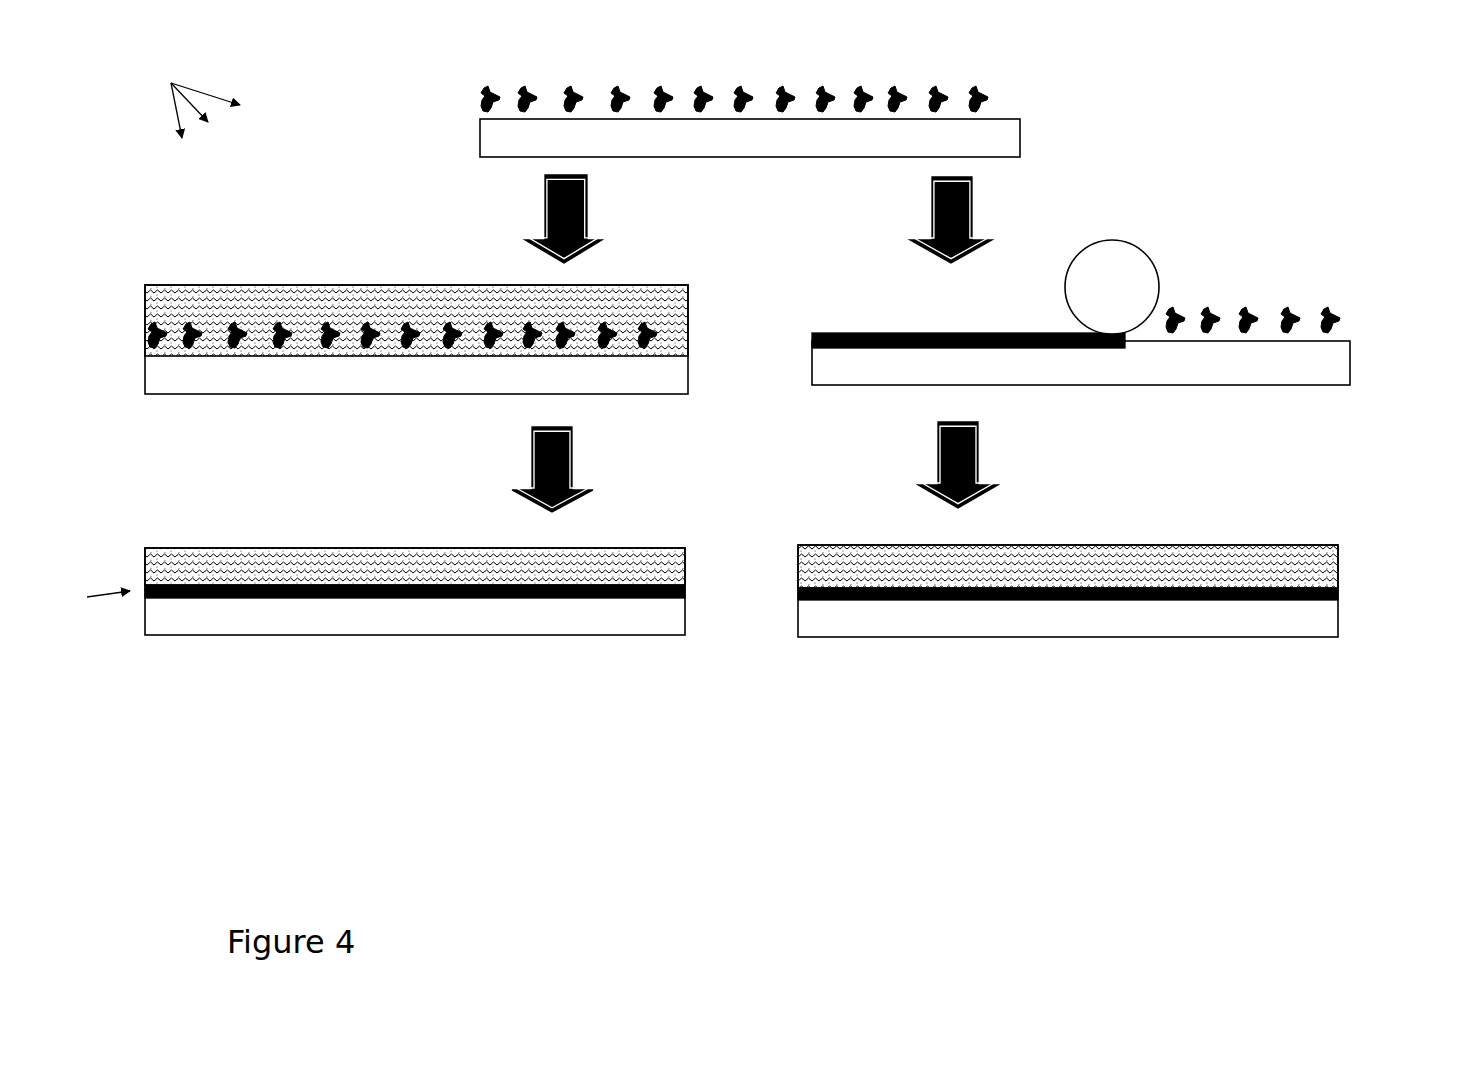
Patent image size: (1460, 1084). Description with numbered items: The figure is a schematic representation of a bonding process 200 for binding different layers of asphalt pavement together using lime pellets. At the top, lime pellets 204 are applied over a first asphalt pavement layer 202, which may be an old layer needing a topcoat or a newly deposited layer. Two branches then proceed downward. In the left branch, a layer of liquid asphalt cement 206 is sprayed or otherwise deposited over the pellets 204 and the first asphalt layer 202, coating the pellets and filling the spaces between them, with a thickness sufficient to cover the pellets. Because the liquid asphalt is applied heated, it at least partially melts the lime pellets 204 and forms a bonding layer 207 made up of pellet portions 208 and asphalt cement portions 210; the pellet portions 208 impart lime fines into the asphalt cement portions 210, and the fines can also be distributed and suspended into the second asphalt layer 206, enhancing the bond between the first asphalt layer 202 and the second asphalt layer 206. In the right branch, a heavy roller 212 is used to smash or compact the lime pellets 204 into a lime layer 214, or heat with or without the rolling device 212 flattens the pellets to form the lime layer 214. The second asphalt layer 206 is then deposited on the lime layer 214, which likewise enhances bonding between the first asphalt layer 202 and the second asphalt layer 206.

The bonding process 200 is at (186, 104).
The asphalt pavement layer 202 is at (500, 138).
The lime pellets 204 is at (480, 92).
The liquid asphalt cement layer 206 is at (332, 295).
The bonding layer 207 is at (107, 584).
The pellet portions 208 is at (253, 597).
The asphalt cement portions 210 is at (296, 598).
The heavy roller 212 is at (1118, 272).
The lime layer 214 is at (905, 333).